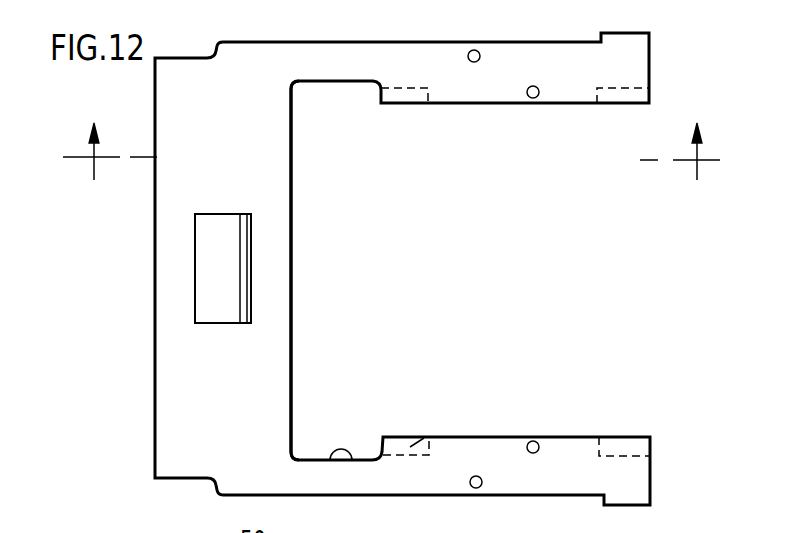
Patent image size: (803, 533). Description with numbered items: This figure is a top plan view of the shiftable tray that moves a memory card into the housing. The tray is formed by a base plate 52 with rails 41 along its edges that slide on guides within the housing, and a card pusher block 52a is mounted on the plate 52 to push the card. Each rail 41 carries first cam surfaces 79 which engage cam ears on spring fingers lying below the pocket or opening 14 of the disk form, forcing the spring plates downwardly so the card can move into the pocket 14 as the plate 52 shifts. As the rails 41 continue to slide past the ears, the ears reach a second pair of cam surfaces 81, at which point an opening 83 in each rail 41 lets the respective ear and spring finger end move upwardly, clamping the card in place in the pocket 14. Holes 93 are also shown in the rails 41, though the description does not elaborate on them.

The rails 41 is at (374, 46).
The base plate 52 is at (284, 344).
The card pusher block 52a is at (195, 244).
The holes 93 is at (528, 87).
The second cam surfaces 81 is at (401, 94).
The first cam surfaces 79 is at (609, 91).
The opening 83 is at (365, 86).
The pocket or opening 14 is at (393, 152).